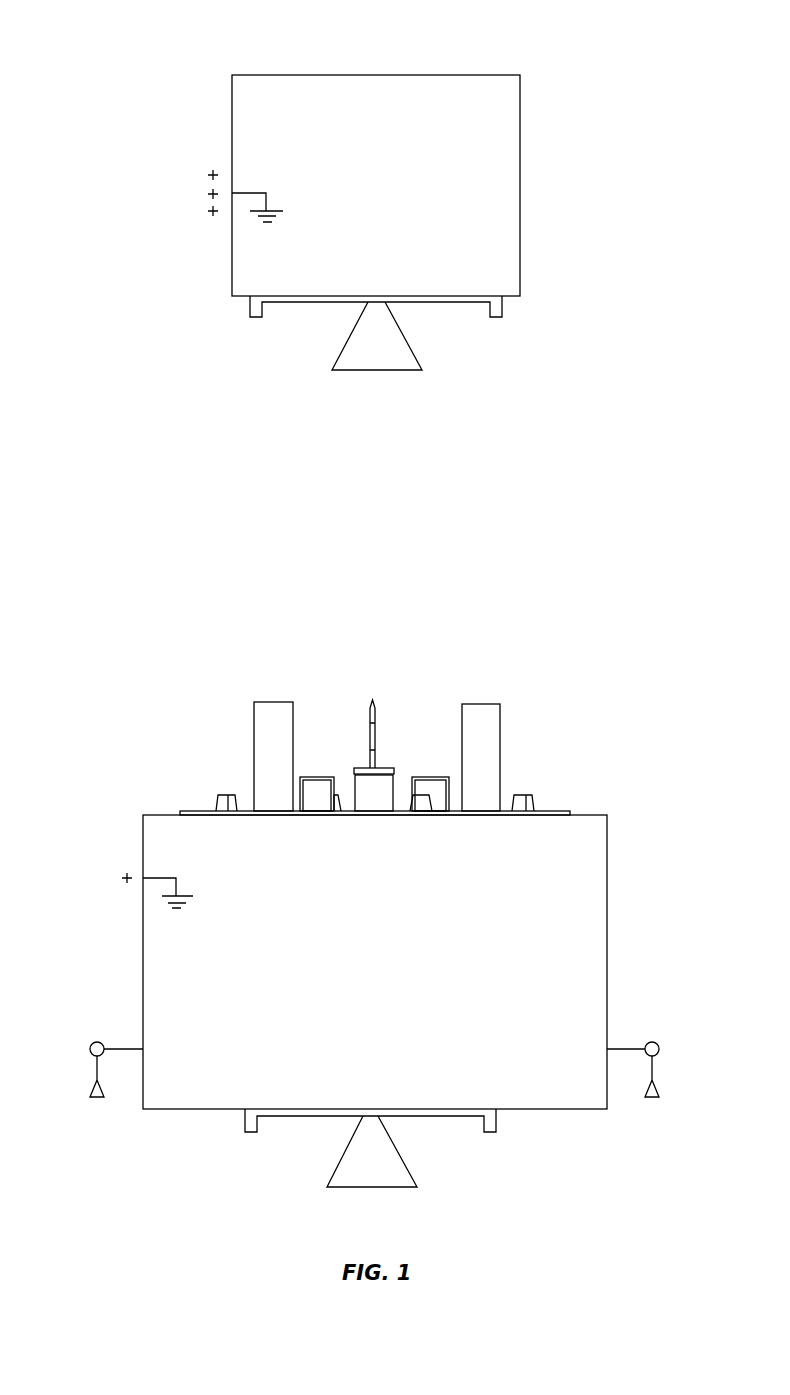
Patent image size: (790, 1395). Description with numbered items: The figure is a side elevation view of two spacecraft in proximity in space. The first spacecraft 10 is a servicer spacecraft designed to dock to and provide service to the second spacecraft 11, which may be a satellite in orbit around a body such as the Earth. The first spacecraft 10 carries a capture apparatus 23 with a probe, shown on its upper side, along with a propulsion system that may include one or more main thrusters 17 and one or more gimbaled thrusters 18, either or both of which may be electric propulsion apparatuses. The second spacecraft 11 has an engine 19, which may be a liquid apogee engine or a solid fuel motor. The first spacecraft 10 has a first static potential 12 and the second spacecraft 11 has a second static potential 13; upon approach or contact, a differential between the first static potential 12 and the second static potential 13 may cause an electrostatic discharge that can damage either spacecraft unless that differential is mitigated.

The first spacecraft 10 is at (592, 660).
The second spacecraft 11 is at (507, 277).
The first static potential 12 is at (106, 873).
The second static potential 13 is at (185, 193).
The main thruster 17 is at (395, 1170).
The gimbaled thrusters 18 is at (93, 1070).
The engine 19 is at (400, 355).
The capture apparatus 23 is at (365, 787).